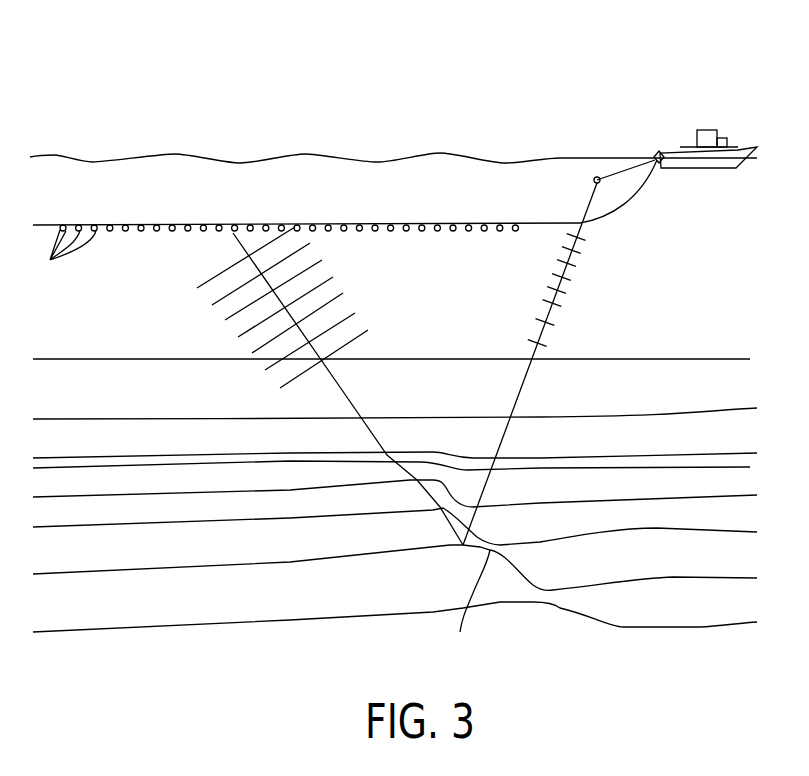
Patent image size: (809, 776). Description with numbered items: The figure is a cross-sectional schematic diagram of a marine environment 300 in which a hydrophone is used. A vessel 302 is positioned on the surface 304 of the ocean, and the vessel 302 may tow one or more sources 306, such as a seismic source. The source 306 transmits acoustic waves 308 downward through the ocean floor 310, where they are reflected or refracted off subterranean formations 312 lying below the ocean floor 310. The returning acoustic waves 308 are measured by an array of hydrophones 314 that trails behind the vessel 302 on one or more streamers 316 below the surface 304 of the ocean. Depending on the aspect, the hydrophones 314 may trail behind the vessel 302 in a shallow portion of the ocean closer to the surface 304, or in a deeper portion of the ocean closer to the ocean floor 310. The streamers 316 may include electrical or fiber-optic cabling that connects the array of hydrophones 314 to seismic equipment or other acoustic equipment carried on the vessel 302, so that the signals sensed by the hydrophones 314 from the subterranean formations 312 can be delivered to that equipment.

The marine environment 300 is at (122, 97).
The vessel 302 is at (750, 147).
The surface 304 is at (377, 161).
The source 306 is at (596, 177).
The acoustic waves 308 is at (553, 300).
The ocean floor 310 is at (673, 358).
The subterranean formations 312 is at (467, 608).
The hydrophones 314 is at (277, 260).
The streamers 316 is at (640, 192).